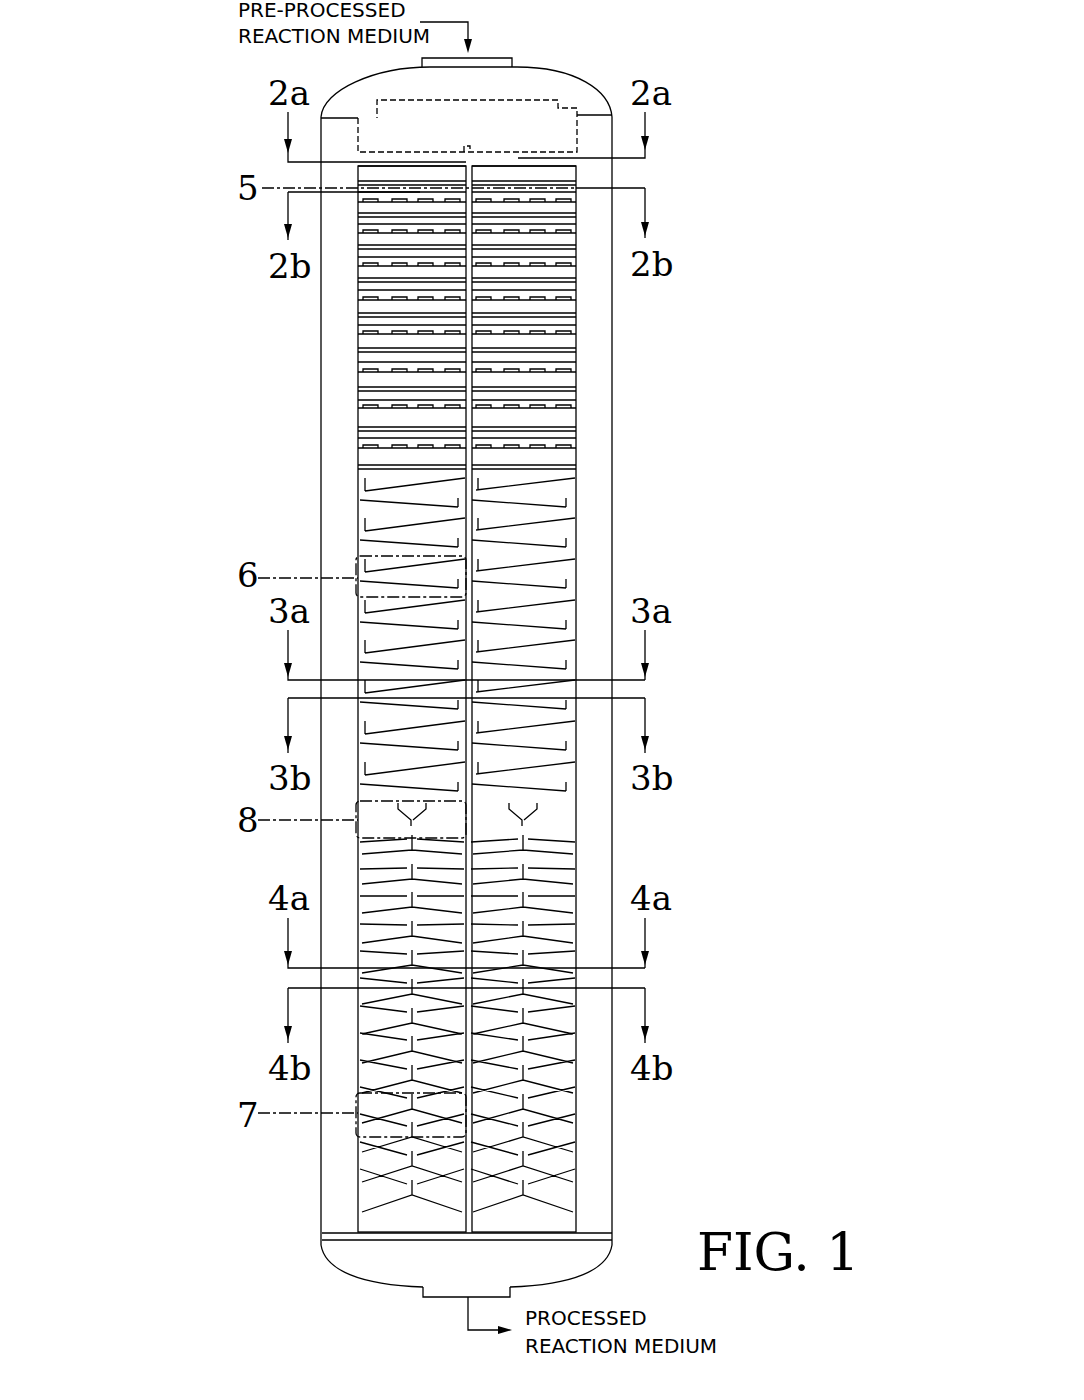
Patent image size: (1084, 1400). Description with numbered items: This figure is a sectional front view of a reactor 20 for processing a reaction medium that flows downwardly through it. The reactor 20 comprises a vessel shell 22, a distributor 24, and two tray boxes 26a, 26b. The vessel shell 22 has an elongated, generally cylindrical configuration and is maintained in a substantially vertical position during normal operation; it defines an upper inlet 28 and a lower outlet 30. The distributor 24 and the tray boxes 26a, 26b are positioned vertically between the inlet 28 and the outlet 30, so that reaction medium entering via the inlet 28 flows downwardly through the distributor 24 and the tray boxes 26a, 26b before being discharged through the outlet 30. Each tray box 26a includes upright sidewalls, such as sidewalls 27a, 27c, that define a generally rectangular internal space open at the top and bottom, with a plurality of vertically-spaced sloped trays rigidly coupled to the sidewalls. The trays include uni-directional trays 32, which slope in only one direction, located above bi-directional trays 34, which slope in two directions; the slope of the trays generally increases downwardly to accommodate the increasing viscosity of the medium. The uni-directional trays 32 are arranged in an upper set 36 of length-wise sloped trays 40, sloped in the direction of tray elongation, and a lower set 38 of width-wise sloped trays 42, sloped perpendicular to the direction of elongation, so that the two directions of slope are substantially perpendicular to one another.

The reactor 20 is at (700, 367).
The vessel shell 22 is at (613, 418).
The distributor 24 is at (522, 100).
The tray box 26a is at (386, 150).
The tray box 26b is at (548, 150).
The upright sidewall 27a is at (462, 506).
The upright sidewall 27c is at (464, 478).
The upper inlet 28 is at (476, 58).
The lower outlet 30 is at (458, 1300).
The uni-directional trays 32 is at (322, 380).
The bi-directional trays 34 is at (345, 862).
The upper set 36 is at (573, 195).
The lower set 38 is at (462, 552).
The length-wise sloped trays 40 is at (576, 171).
The width-wise sloped trays 42 is at (407, 527).